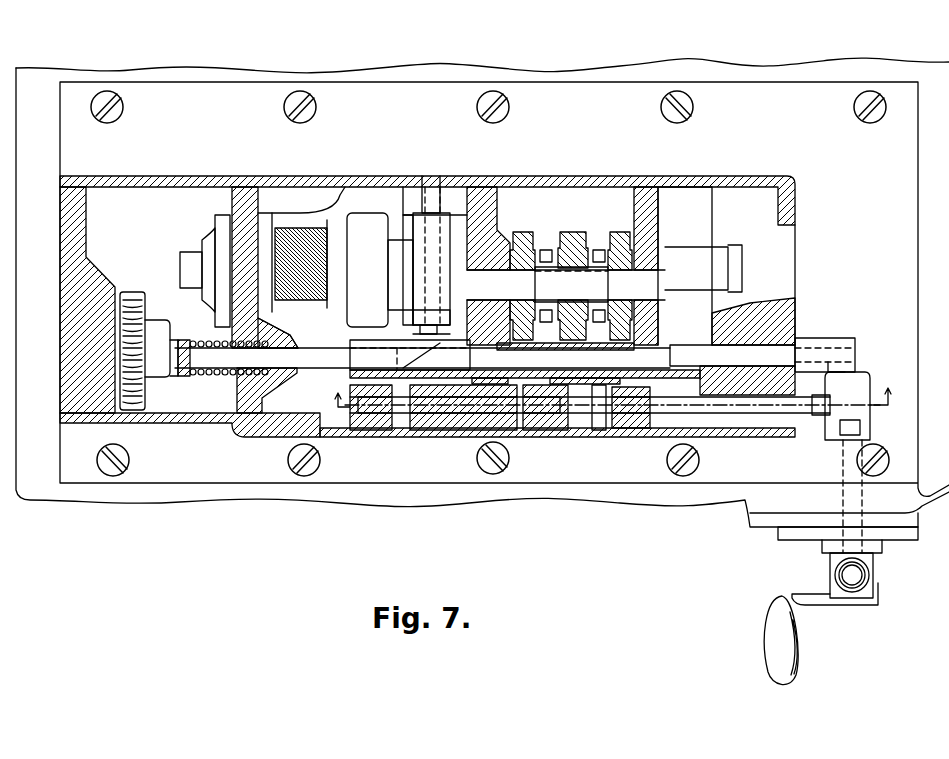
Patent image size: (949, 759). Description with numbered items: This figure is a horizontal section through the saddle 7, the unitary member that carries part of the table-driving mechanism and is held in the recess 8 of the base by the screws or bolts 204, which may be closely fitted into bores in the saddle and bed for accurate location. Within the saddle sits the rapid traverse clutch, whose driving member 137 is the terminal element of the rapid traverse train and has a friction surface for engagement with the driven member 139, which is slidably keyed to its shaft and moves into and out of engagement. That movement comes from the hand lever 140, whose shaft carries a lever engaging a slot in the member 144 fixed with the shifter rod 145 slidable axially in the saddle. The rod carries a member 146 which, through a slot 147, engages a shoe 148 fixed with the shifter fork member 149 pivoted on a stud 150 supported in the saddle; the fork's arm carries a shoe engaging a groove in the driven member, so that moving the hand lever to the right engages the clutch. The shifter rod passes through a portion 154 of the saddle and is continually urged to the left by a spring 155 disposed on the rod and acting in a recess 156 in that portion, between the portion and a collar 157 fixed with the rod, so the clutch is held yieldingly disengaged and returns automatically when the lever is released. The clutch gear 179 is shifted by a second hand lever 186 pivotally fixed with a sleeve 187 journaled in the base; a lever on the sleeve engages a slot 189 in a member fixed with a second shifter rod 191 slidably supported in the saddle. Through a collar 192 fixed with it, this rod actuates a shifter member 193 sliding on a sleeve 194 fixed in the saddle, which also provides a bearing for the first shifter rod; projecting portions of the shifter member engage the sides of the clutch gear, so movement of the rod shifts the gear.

The saddle 7 is at (605, 178).
The recess 8 is at (613, 386).
The driving member 137 is at (330, 270).
The driven member 139 is at (402, 245).
The hand lever 140 is at (797, 650).
The member 144 is at (850, 322).
The shifter rod 145 is at (732, 358).
The member 146 is at (345, 372).
The slot 147 is at (413, 322).
The shoe 148 is at (440, 330).
The shifter fork member 149 is at (405, 214).
The stud 150 is at (437, 192).
The portion of saddle 154 is at (282, 330).
The spring 155 is at (198, 374).
The recess 156 is at (263, 376).
The collar 157 is at (185, 372).
The clutch gear 179 is at (600, 210).
The hand lever 186 is at (875, 566).
The sleeve 187 is at (846, 492).
The slot 189 is at (843, 441).
The shifter rod 191 is at (757, 410).
The collar 192 is at (600, 430).
The shifter member 193 is at (622, 393).
The sleeve 194 is at (658, 338).
The screws or bolts 204 is at (123, 108).